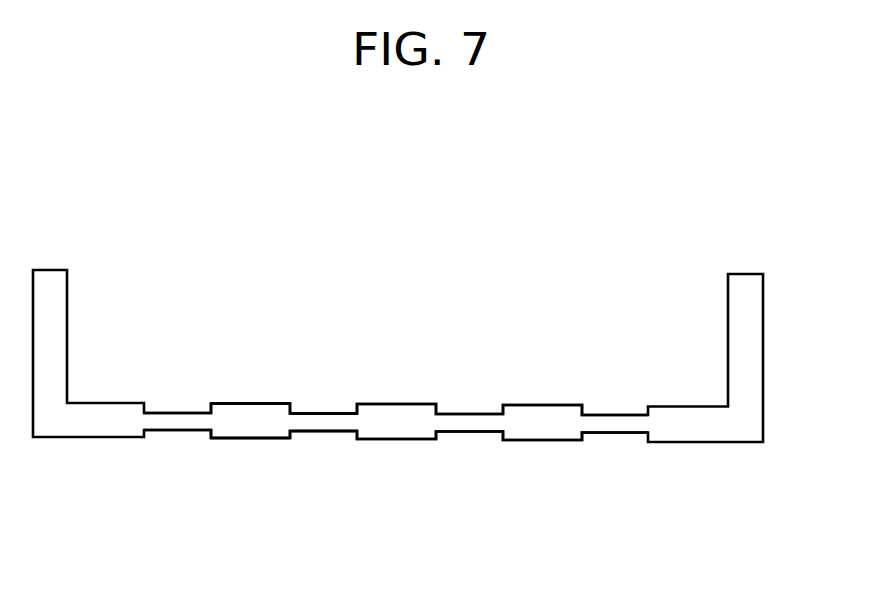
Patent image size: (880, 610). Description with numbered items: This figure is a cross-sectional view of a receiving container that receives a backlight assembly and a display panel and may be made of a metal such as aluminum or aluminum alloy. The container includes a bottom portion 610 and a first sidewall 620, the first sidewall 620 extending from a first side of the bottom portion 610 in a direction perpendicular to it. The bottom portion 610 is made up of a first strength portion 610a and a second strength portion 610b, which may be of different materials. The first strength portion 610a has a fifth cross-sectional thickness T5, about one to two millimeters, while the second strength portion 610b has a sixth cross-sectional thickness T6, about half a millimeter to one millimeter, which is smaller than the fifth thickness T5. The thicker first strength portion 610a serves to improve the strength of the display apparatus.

The first sidewall 620 is at (91, 423).
The bottom portion 610 is at (367, 518).
The first strength portion 610a is at (263, 423).
The second strength portion 610b is at (332, 423).
The fifth cross-sectional thickness T5 is at (233, 438).
The sixth cross-sectional thickness T6 is at (178, 430).